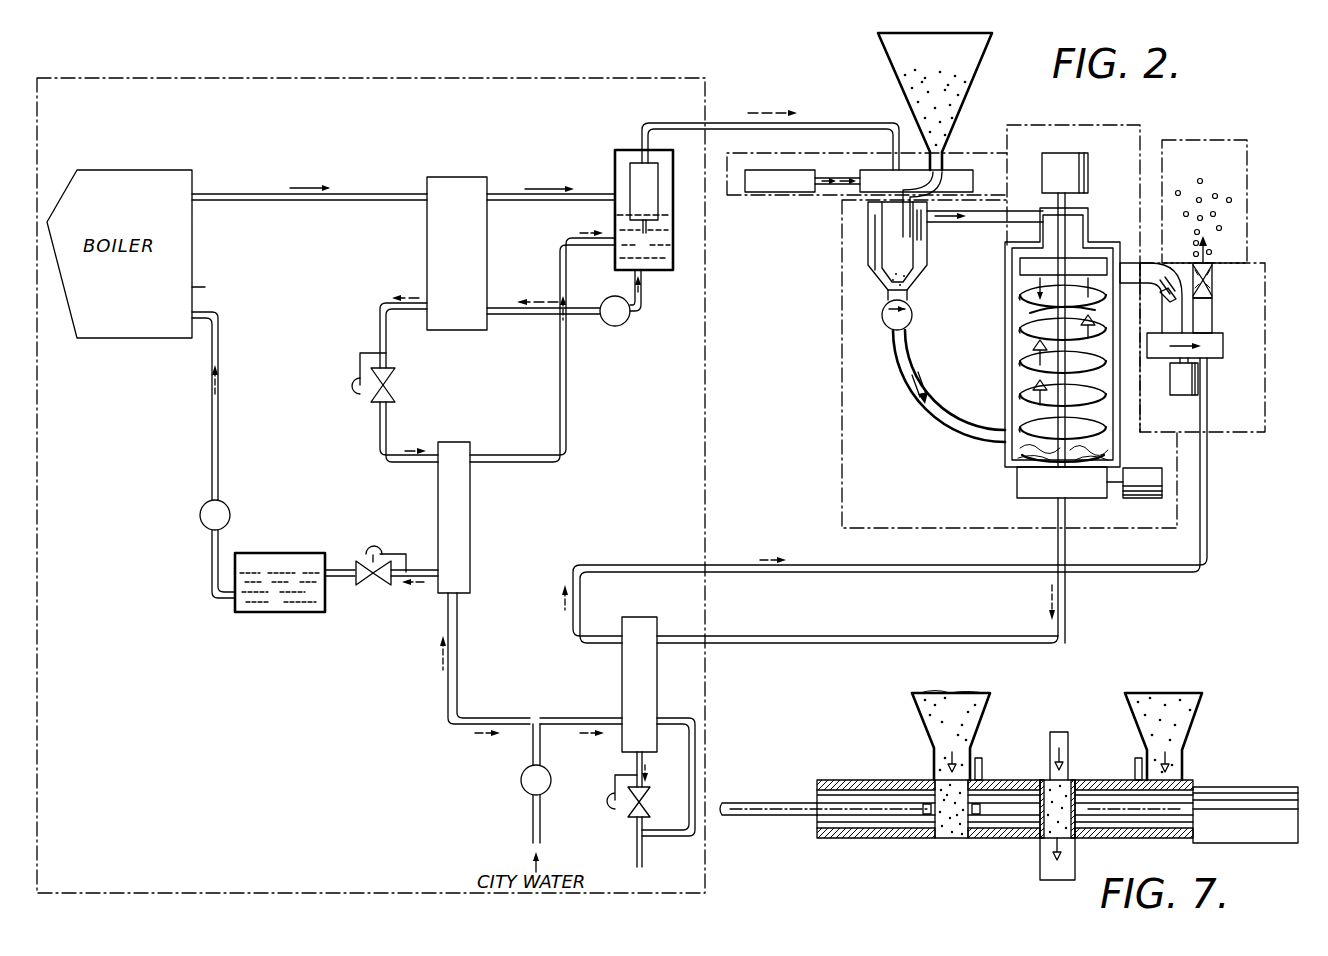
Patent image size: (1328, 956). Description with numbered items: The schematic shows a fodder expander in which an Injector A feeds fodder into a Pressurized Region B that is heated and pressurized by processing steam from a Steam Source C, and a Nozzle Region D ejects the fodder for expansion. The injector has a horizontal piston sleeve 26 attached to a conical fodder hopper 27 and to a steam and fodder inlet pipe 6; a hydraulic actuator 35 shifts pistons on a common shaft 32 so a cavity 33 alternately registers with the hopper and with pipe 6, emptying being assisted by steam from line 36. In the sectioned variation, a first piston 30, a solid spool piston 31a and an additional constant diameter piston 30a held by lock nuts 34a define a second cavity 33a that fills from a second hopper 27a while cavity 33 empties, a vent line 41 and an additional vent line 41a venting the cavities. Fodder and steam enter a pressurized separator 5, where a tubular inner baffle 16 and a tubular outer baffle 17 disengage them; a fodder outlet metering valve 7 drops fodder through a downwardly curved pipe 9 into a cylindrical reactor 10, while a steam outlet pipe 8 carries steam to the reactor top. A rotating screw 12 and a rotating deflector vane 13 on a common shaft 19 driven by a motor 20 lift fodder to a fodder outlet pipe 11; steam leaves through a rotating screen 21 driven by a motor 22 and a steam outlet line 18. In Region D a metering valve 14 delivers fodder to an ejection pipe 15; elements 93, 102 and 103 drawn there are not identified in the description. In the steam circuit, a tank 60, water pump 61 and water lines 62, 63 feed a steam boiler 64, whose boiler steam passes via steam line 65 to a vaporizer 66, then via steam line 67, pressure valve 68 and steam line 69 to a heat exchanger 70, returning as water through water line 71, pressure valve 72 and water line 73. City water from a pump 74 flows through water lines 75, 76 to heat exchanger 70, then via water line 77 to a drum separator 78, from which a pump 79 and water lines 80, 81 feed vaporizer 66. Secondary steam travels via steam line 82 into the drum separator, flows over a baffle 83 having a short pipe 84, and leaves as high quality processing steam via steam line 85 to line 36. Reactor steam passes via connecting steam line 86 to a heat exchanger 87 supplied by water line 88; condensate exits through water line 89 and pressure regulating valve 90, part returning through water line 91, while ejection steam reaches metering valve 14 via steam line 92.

In FIG. 2, the pressurized separator 5 is at (928, 256).
In FIG. 2, the steam and fodder inlet pipe 6 is at (895, 208).
In FIG. 7, the steam and fodder inlet pipe 6 is at (1040, 875).
In FIG. 2, the fodder outlet metering valve 7 is at (913, 320).
In FIG. 2, the steam outlet pipe 8 is at (960, 228).
In FIG. 2, the downwardly curved pipe 9 is at (940, 420).
In FIG. 2, the cylindrical reactor 10 is at (1005, 391).
In FIG. 2, the fodder outlet pipe 11 is at (1125, 262).
In FIG. 2, the rotating screw 12 is at (1035, 357).
In FIG. 2, the rotating deflector vane 13 is at (1020, 266).
In FIG. 2, the metering valve 14 is at (1213, 358).
In FIG. 2, the ejection pipe 15 is at (1212, 318).
In FIG. 2, the tubular inner baffle 16 is at (870, 262).
In FIG. 2, the tubular outer baffle 17 is at (915, 222).
In FIG. 2, the steam outlet line 18 is at (1058, 549).
In FIG. 2, the common shaft 19 is at (1030, 320).
In FIG. 2, the motor 20 is at (1088, 165).
In FIG. 2, the rotating screen 21 is at (1017, 489).
In FIG. 2, the motor 22 is at (1133, 476).
In FIG. 7, the piston sleeve 26 is at (1240, 787).
In FIG. 2, the fodder hopper 27 is at (976, 93).
In FIG. 7, the fodder hopper 27 is at (1192, 728).
In FIG. 7, the second hopper 27a is at (920, 716).
In FIG. 7, the first piston 30 is at (1110, 840).
In FIG. 7, the additional constant diameter piston 30a is at (853, 838).
In FIG. 7, the solid spool piston 31a is at (1010, 838).
In FIG. 2, the common shaft 32 is at (842, 194).
In FIG. 7, the common shaft 32 is at (815, 820).
In FIG. 7, the cavity 33 is at (1072, 785).
In FIG. 7, the second cavity 33a is at (946, 840).
In FIG. 7, the lock nuts 34a is at (925, 814).
In FIG. 2, the hydraulic actuator 35 is at (768, 170).
In FIG. 2, the steam line 36 is at (893, 150).
In FIG. 7, the steam line 36 is at (1070, 748).
In FIG. 7, the vent line 41 is at (1135, 774).
In FIG. 7, the additional vent line 41a is at (982, 758).
In FIG. 2, the tank 60 is at (285, 553).
In FIG. 2, the water pump 61 is at (228, 508).
In FIG. 2, the water line 62 is at (212, 556).
In FIG. 2, the water line 63 is at (212, 455).
In FIG. 2, the steam boiler 64 is at (206, 289).
In FIG. 2, the steam line 65 is at (244, 200).
In FIG. 2, the vaporizer 66 is at (427, 249).
In FIG. 2, the steam line 67 is at (380, 324).
In FIG. 2, the pressure valve 68 is at (396, 389).
In FIG. 2, the steam line 69 is at (380, 431).
In FIG. 2, the heat exchanger 70 is at (438, 493).
In FIG. 2, the water line 71 is at (420, 568).
In FIG. 2, the pressure valve 72 is at (378, 582).
In FIG. 2, the water line 73 is at (343, 569).
In FIG. 2, the pump 74 is at (521, 776).
In FIG. 2, the water line 75 is at (533, 821).
In FIG. 2, the water line 76 is at (457, 660).
In FIG. 2, the water line 77 is at (512, 464).
In FIG. 2, the drum separator 78 is at (637, 215).
In FIG. 2, the pump 79 is at (609, 327).
In FIG. 2, the water line 80 is at (645, 292).
In FIG. 2, the water line 81 is at (521, 315).
In FIG. 2, the steam line 82 is at (512, 201).
In FIG. 2, the baffle 83 is at (630, 182).
In FIG. 2, the short pipe 84 is at (656, 226).
In FIG. 2, the steam line 85 is at (665, 118).
In FIG. 2, the connecting steam line 86 is at (839, 636).
In FIG. 2, the heat exchanger 87 is at (622, 666).
In FIG. 2, the water line 88 is at (594, 702).
In FIG. 2, the water line 89 is at (637, 761).
In FIG. 2, the pressure regulating valve 90 is at (653, 800).
In FIG. 2, the water line 91 is at (691, 697).
In FIG. 2, the steam line 92 is at (1208, 519).
In FIG. 2, the nozzle 93 is at (1212, 285).
In FIG. 2, the control box 102 is at (1186, 395).
In FIG. 2, the vapor zone 103 is at (1247, 206).
In FIG. 2, the Injector A is at (796, 203).
In FIG. 2, the Pressurized Region B is at (842, 350).
In FIG. 2, the Steam Source C is at (392, 72).
In FIG. 2, the Nozzle Region D is at (1265, 349).